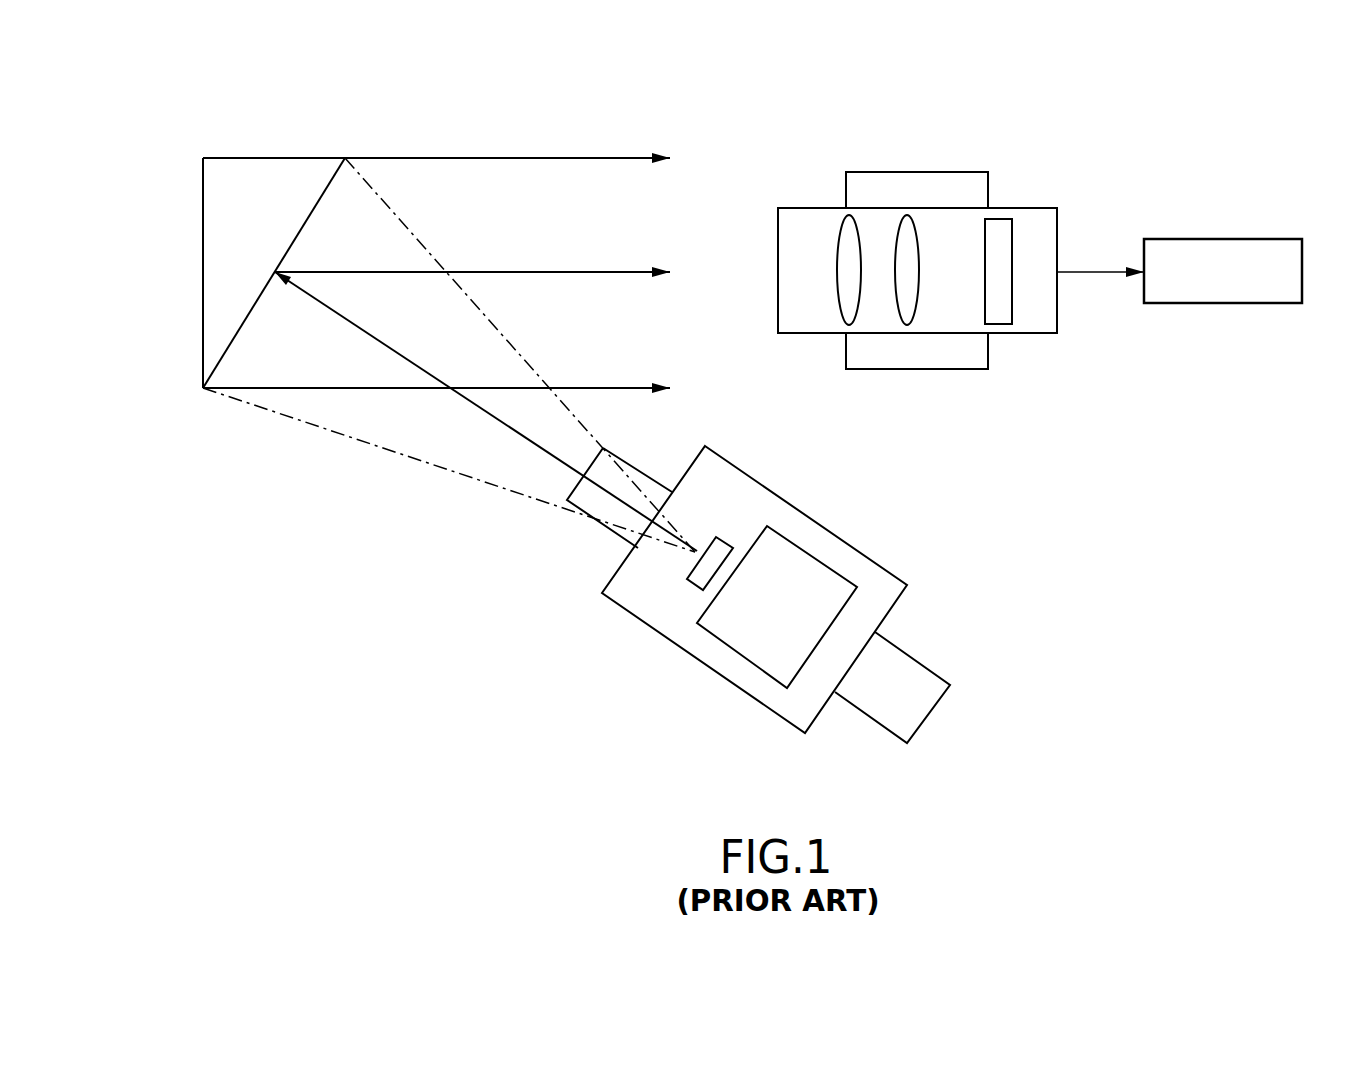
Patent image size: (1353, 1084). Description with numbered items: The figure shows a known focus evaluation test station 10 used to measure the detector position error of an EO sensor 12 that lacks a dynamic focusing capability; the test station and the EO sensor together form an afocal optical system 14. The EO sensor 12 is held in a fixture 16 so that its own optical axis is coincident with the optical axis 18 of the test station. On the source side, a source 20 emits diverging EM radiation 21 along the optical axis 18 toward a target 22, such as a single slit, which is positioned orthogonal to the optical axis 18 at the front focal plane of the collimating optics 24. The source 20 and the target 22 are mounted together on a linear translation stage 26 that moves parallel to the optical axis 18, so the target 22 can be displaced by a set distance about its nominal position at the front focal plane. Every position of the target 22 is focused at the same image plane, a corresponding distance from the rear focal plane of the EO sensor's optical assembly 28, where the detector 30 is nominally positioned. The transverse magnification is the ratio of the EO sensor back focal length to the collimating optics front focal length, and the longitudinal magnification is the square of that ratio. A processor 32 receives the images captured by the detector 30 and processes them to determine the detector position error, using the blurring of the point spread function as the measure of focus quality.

The focus evaluation test station 10 is at (325, 633).
The EO sensor 12 is at (1035, 205).
The afocal optical system 14 is at (350, 122).
The fixture 16 is at (990, 369).
The optical axis 18 is at (390, 333).
The source 20 is at (815, 553).
The diverging EM radiation 21 is at (347, 450).
The target 22 is at (690, 588).
The collimating optics 24 is at (230, 372).
The linear translation stage 26 is at (882, 730).
The optical assembly 28 is at (895, 270).
The detector 30 is at (1010, 265).
The processor 32 is at (1245, 239).